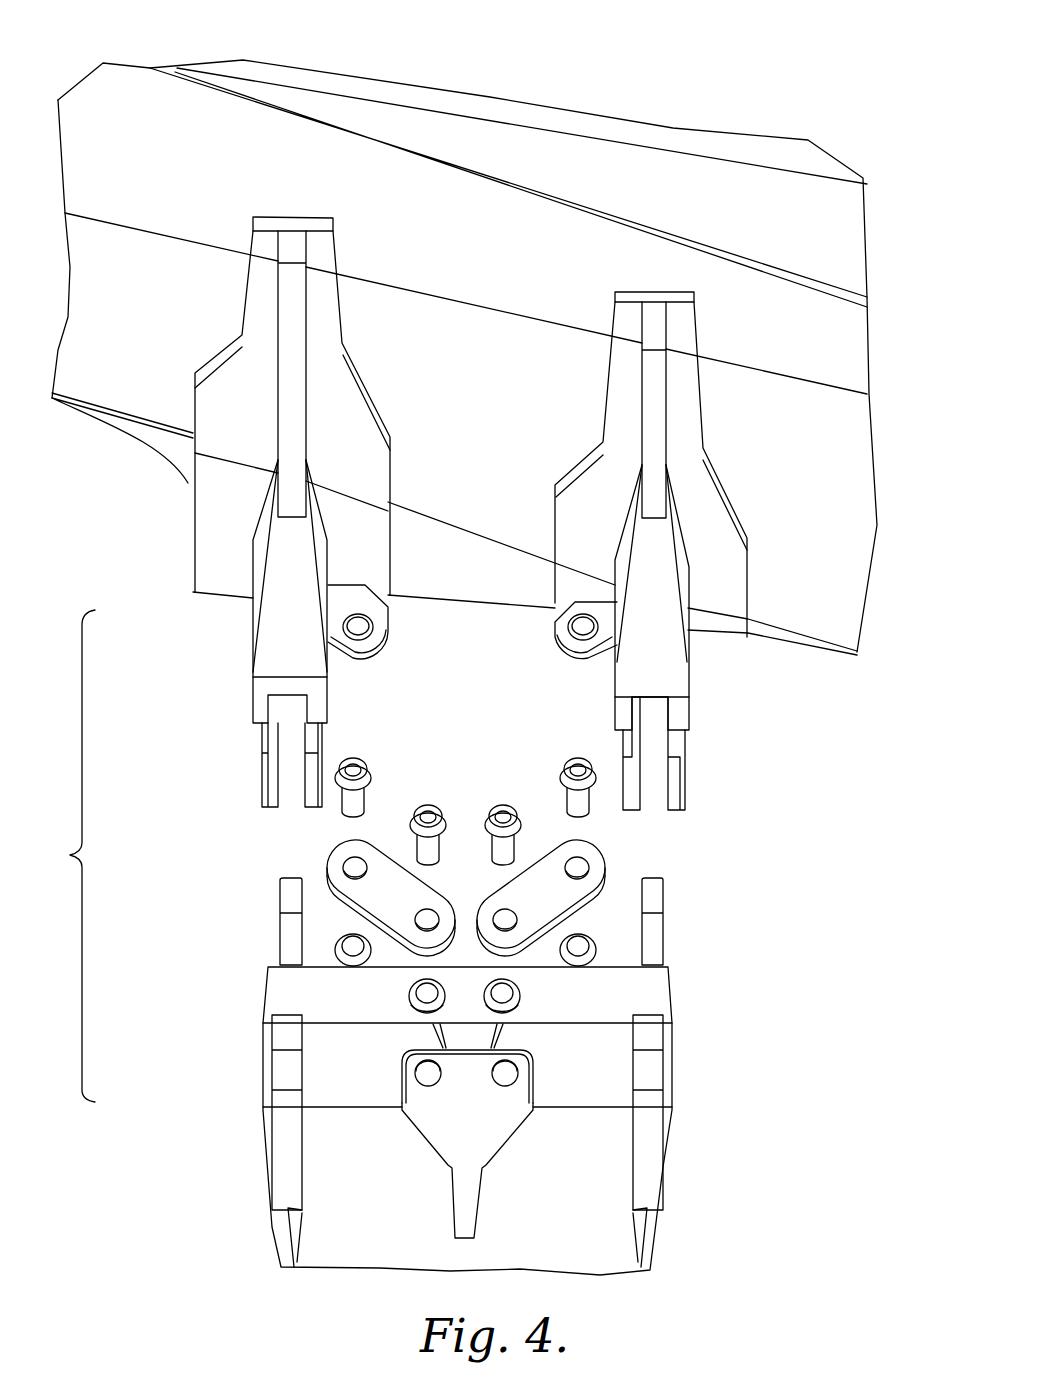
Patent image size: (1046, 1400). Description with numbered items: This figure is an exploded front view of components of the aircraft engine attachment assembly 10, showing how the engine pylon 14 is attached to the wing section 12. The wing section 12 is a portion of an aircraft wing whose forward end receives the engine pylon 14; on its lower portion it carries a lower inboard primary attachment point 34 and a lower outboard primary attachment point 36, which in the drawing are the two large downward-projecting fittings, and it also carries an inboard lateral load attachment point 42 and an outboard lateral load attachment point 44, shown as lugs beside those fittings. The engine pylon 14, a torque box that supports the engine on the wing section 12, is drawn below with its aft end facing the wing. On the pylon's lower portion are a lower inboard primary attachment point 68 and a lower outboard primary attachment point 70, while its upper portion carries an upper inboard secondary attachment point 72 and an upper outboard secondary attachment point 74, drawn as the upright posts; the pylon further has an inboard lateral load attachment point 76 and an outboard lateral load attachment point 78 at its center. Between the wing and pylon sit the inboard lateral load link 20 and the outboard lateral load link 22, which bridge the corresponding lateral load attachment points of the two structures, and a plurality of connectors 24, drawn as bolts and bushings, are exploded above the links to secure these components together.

The aircraft engine attachment assembly 10 is at (190, 45).
The wing section 12 is at (700, 172).
The engine pylon 14 is at (307, 1218).
The inboard lateral load link 20 is at (627, 852).
The outboard lateral load link 22 is at (312, 852).
The connectors 24 is at (513, 812).
The lower inboard primary attachment point 34 is at (712, 788).
The lower outboard primary attachment point 36 is at (228, 788).
The inboard lateral load attachment point 42 is at (573, 665).
The outboard lateral load attachment point 44 is at (367, 665).
The lower inboard primary attachment point 68 is at (692, 1032).
The lower outboard primary attachment point 70 is at (248, 1035).
The upper inboard secondary attachment point 72 is at (683, 910).
The upper outboard secondary attachment point 74 is at (262, 907).
The inboard lateral load attachment point 76 is at (532, 1045).
The outboard lateral load attachment point 78 is at (403, 1047).